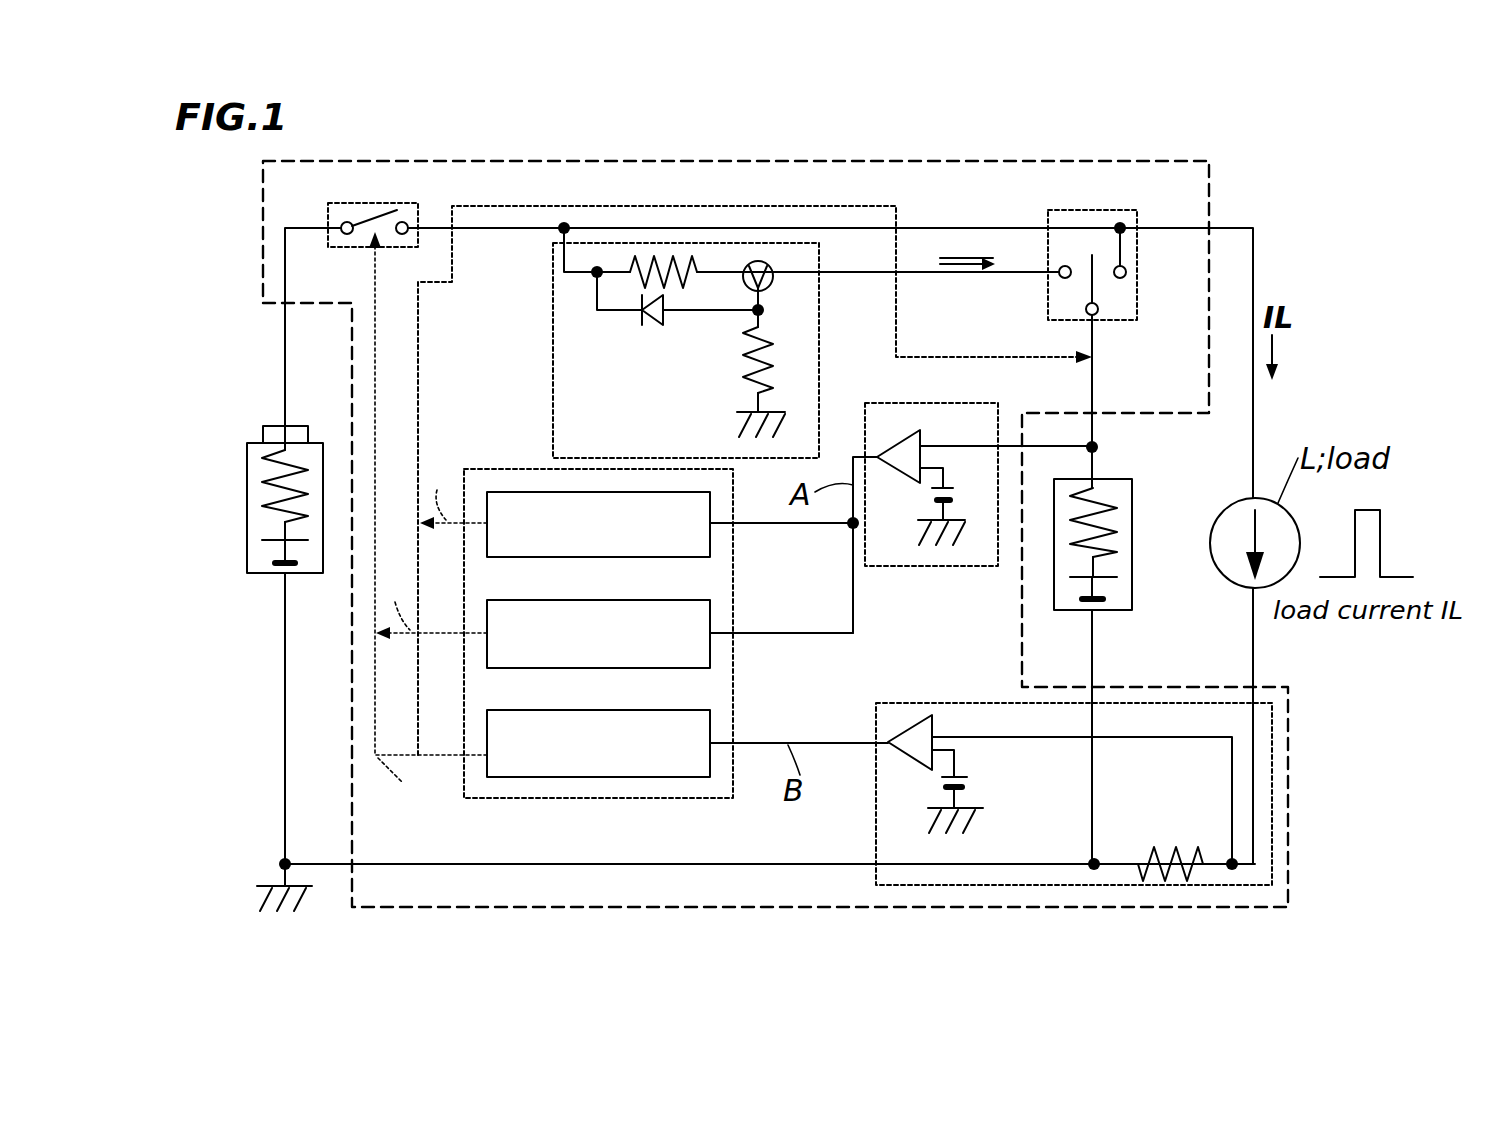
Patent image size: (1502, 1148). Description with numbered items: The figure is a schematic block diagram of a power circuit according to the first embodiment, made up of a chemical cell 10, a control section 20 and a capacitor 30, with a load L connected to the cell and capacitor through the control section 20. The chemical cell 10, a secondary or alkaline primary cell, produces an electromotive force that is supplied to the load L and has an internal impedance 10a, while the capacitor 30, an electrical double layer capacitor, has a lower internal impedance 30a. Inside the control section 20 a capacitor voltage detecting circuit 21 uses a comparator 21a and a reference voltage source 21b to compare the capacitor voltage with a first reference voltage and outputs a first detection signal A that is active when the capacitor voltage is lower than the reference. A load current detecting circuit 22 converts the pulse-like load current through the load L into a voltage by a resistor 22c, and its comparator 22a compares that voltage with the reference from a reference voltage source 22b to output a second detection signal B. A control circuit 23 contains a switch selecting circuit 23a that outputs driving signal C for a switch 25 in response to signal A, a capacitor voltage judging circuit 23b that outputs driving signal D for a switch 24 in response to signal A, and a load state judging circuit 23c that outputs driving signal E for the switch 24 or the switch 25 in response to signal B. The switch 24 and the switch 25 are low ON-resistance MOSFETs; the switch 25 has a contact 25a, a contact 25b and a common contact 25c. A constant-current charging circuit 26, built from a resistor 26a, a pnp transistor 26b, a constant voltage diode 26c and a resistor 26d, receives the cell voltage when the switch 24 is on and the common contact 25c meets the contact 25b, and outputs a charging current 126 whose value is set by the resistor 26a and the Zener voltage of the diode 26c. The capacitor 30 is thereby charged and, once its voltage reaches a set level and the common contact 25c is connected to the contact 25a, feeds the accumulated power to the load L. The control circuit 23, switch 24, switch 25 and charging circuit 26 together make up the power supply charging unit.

The chemical cell 10 is at (251, 545).
The internal impedance 10a is at (270, 457).
The control section 20 is at (1209, 175).
The capacitor voltage detecting circuit 21 is at (977, 520).
The comparator 21a is at (898, 438).
The reference voltage source 21b is at (970, 475).
The load current detecting circuit 22 is at (1187, 794).
The comparator 22a is at (905, 758).
The reference voltage source 22b is at (968, 782).
The resistor 22c is at (1150, 853).
The control circuit 23 is at (628, 543).
The switch selecting circuit 23a is at (710, 542).
The capacitor voltage judging circuit 23b is at (710, 623).
The load state judging circuit 23c is at (710, 730).
The switch 24 is at (342, 203).
The switch 25 is at (1100, 236).
The contact 25a is at (1127, 270).
The contact 25b is at (1060, 278).
The common contact 25c is at (1098, 313).
The constant-current charging circuit 26 is at (755, 441).
The resistor 26a is at (690, 278).
The pnp transistor 26b is at (773, 282).
The constant voltage diode 26c is at (658, 323).
The resistor 26d is at (745, 365).
The capacitor 30 is at (1137, 568).
The internal impedance 30a is at (1108, 528).
The current I26 126 is at (968, 247).